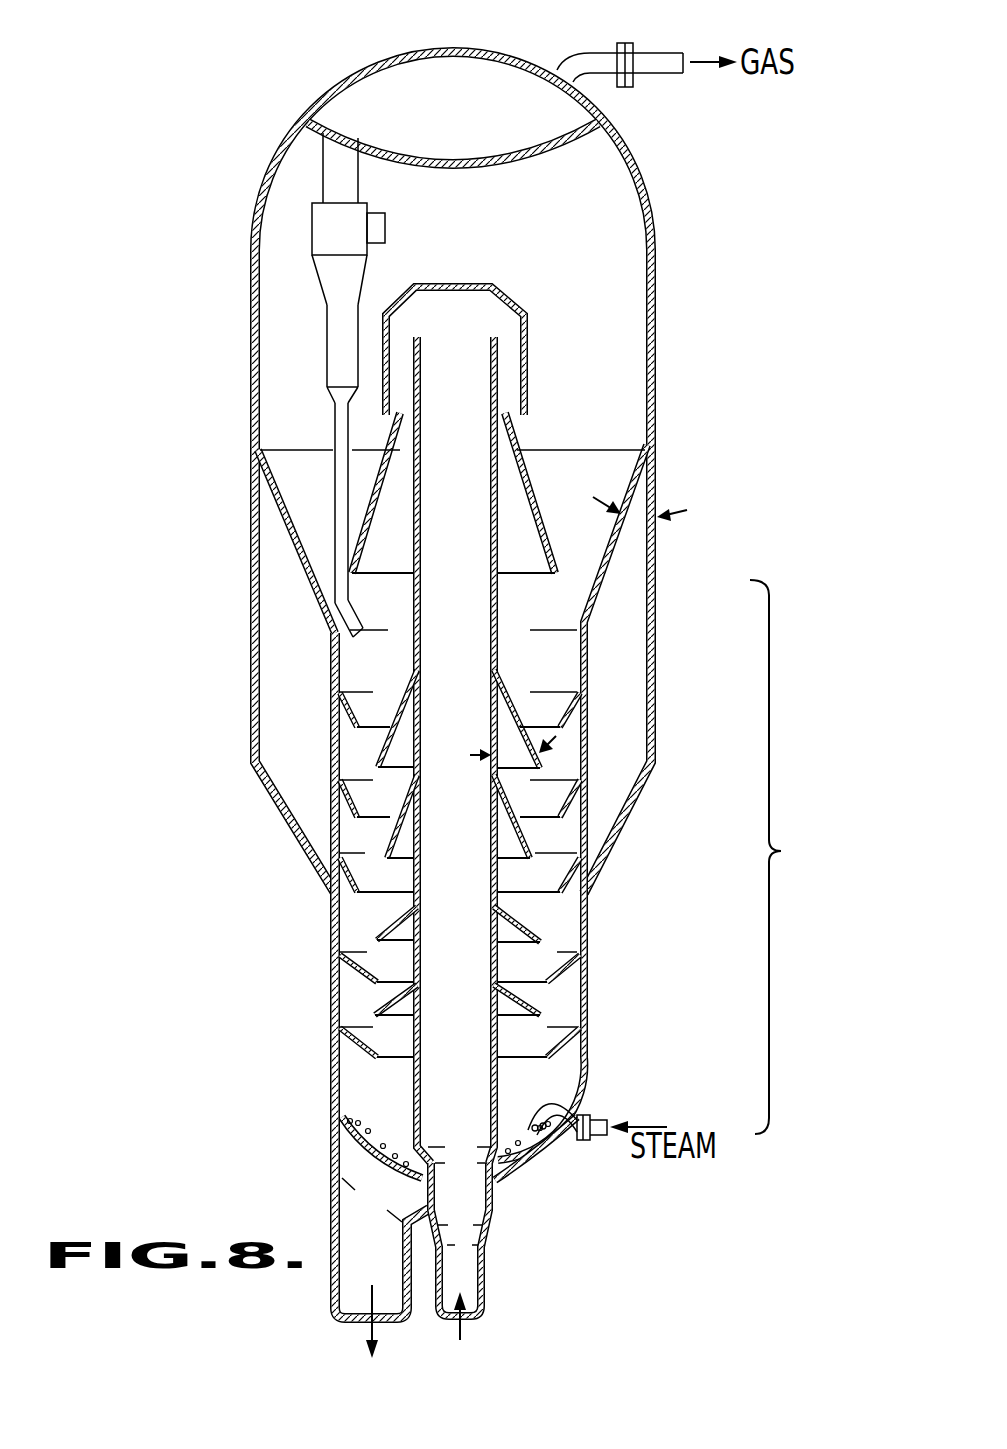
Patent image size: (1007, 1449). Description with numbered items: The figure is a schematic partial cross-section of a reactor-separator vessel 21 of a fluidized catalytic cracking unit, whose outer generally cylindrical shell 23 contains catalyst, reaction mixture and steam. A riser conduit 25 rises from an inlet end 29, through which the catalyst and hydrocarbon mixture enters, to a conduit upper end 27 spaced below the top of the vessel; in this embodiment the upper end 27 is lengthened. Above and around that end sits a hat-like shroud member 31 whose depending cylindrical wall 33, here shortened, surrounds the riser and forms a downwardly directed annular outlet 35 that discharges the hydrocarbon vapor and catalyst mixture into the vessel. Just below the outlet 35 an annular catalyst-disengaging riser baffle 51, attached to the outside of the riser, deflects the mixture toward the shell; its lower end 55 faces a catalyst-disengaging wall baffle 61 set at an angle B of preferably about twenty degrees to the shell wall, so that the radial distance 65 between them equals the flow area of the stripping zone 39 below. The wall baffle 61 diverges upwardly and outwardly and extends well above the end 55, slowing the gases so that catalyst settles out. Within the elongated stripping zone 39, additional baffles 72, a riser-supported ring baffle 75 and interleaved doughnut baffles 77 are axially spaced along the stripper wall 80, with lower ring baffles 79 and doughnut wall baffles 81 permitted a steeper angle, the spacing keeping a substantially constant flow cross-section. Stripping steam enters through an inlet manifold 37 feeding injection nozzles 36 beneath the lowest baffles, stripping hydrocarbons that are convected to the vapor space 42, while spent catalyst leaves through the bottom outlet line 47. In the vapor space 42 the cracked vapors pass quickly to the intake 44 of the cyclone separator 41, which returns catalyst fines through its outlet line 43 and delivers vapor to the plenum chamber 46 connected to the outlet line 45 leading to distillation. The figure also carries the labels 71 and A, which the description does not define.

The reactor vessel 21 is at (270, 170).
The shell 23 is at (252, 403).
The riser conduit 25 is at (467, 806).
The conduit upper end 27 is at (467, 335).
The inlet end 29 is at (340, 1318).
The shroud member 31 is at (483, 326).
The cylindrical wall 33 is at (528, 346).
The annular outlet 35 is at (520, 415).
The injection nozzles 36 is at (588, 1084).
The inlet manifold 37 is at (533, 1150).
The stripping zone 39 is at (567, 987).
The cyclone separator 41 is at (358, 268).
The vapor space 42 is at (496, 241).
The outlet line 43 is at (338, 477).
The cyclone intake 44 is at (386, 226).
The outlet line 45 is at (670, 52).
The plenum chamber 46 is at (466, 120).
The outlet line 47 is at (485, 1298).
The riser baffle 51 is at (528, 488).
The lower end 55 is at (517, 576).
The wall baffle 61 is at (643, 450).
The cross-sectional flow area 65 is at (590, 562).
The tray 71 is at (560, 893).
The additional baffle 72 is at (540, 770).
The ring baffle 75 is at (533, 852).
The doughnut baffles 77 is at (565, 717).
The lower ring baffles 79 is at (537, 1012).
The stripper wall 80 is at (590, 1047).
The doughnut wall baffles 81 is at (557, 960).
The flow direction A is at (469, 752).
The angle B is at (682, 499).